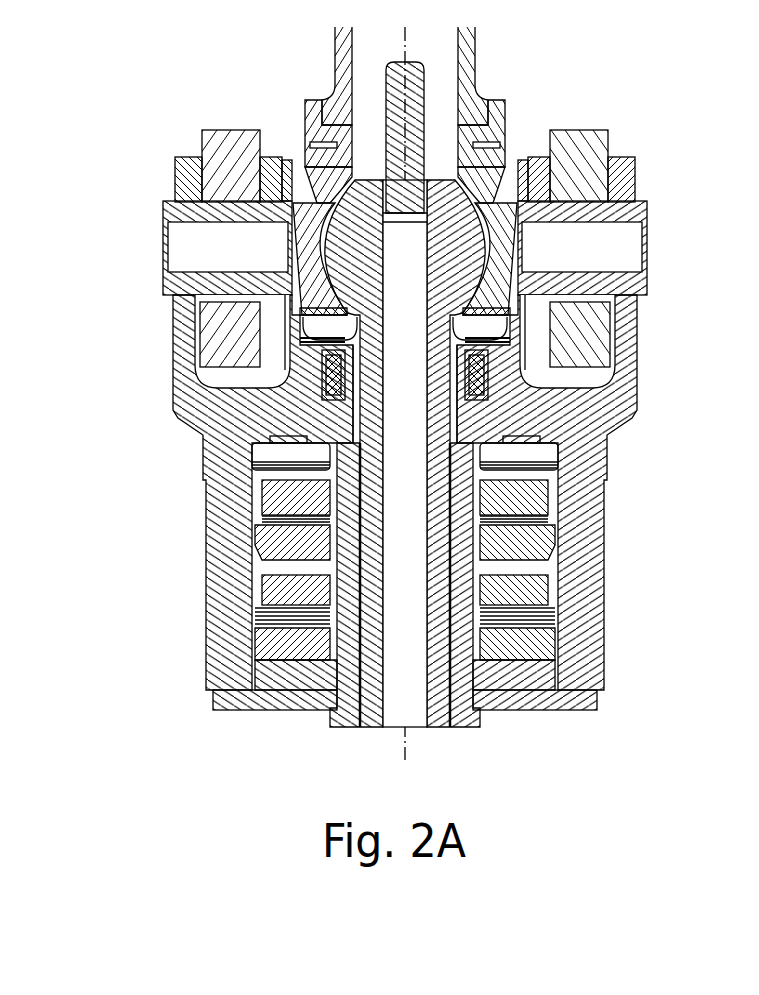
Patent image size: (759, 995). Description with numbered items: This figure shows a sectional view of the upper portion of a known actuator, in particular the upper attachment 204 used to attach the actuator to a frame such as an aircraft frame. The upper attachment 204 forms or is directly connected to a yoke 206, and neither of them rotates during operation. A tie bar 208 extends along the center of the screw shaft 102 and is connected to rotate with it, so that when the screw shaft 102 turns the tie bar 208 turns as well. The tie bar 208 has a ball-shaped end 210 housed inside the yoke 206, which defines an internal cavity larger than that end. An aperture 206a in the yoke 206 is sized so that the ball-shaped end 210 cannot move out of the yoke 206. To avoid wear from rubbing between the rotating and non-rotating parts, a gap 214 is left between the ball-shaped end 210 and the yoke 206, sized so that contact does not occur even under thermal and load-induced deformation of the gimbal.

The screw shaft 102 is at (473, 722).
The upper attachment 204 is at (462, 77).
The yoke 206 is at (510, 260).
The aperture 206a is at (320, 310).
The tie bar 208 is at (372, 438).
The ball-shaped end 210 is at (328, 247).
The gap 214 is at (470, 322).